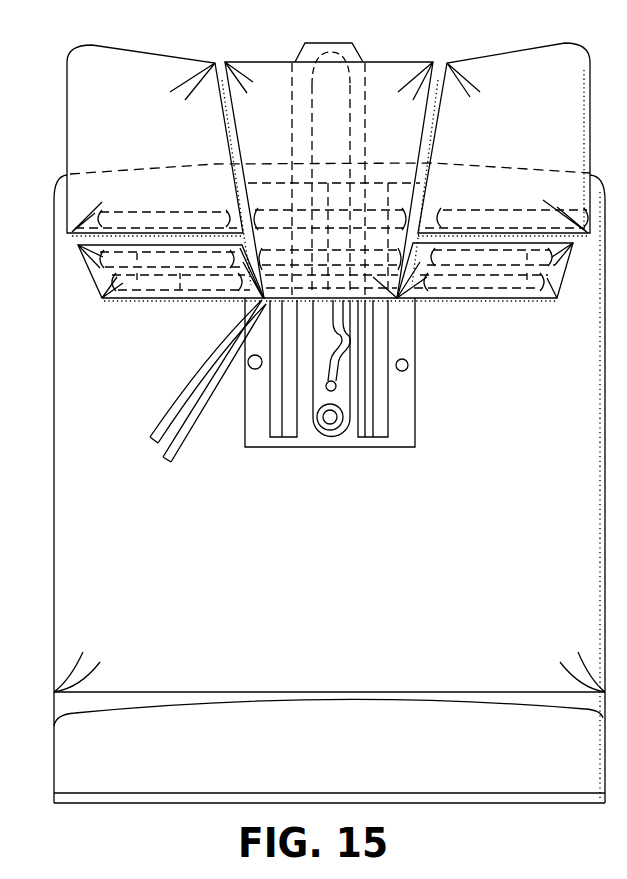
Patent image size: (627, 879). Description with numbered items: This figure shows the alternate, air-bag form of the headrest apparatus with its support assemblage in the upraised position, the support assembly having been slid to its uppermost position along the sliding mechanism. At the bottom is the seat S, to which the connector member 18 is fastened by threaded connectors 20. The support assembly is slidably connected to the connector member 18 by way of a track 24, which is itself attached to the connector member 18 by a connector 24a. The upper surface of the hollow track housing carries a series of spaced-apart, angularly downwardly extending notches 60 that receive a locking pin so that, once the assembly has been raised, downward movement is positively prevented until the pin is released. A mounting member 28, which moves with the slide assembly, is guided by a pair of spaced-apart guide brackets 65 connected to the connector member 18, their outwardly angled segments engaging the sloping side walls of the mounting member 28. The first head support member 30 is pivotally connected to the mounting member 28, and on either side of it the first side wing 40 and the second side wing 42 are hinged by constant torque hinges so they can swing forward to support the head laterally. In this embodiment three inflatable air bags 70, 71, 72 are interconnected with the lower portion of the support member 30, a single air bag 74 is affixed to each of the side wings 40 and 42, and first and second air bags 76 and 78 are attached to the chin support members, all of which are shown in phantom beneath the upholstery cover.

The seat S is at (373, 621).
The connector member 18 is at (396, 452).
The threaded connectors 20 is at (432, 392).
The track 24 is at (318, 388).
The connector 24a is at (328, 431).
The mounting member 28 is at (352, 50).
The first head support member 30 is at (260, 80).
The first lateral side wing 40 is at (98, 70).
The second lateral side wing 42 is at (507, 70).
The notches 60 is at (338, 353).
The guide brackets 65 is at (381, 428).
The air bag 70 is at (329, 168).
The air bag 71 is at (323, 258).
The air bag 72 is at (385, 305).
The air bag 74 is at (135, 215).
The first air bag 76 is at (132, 293).
The second air bag 78 is at (180, 300).